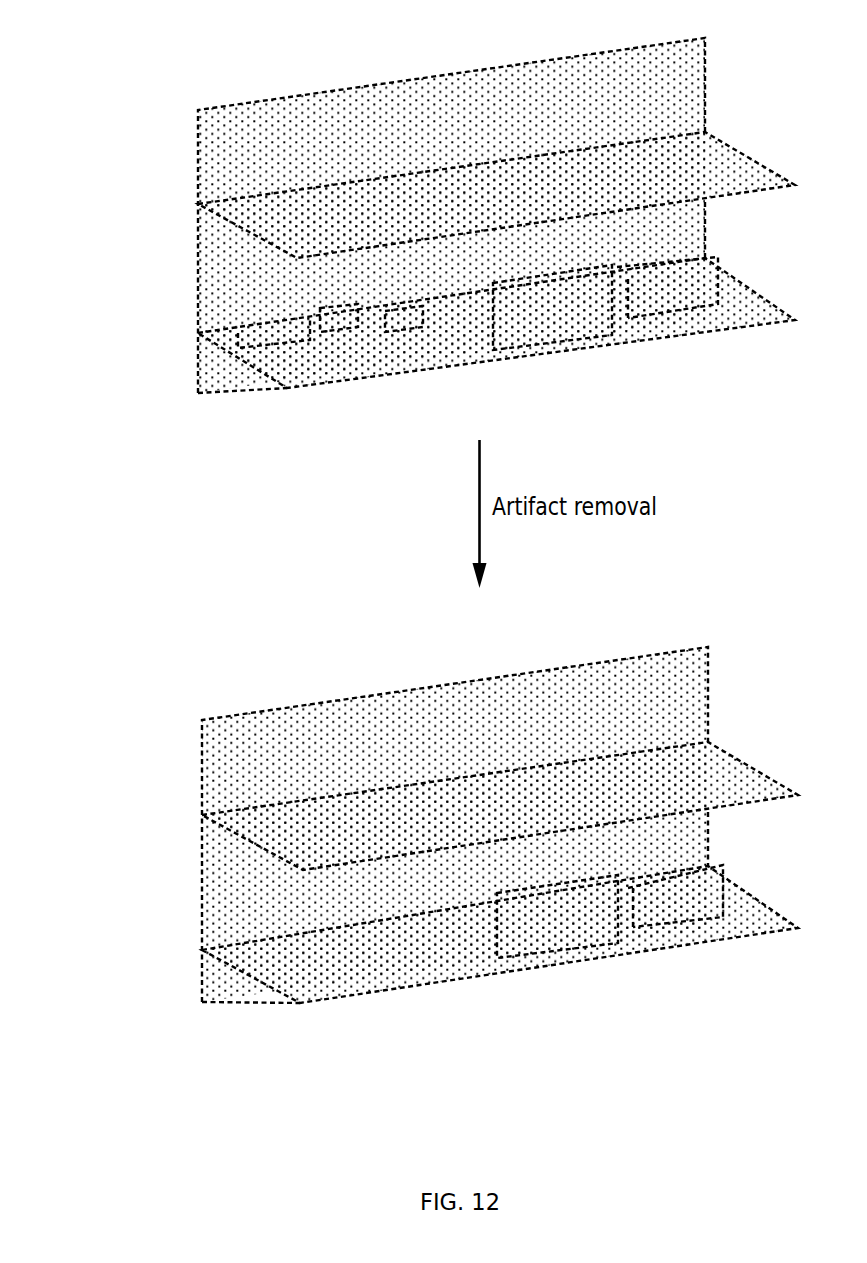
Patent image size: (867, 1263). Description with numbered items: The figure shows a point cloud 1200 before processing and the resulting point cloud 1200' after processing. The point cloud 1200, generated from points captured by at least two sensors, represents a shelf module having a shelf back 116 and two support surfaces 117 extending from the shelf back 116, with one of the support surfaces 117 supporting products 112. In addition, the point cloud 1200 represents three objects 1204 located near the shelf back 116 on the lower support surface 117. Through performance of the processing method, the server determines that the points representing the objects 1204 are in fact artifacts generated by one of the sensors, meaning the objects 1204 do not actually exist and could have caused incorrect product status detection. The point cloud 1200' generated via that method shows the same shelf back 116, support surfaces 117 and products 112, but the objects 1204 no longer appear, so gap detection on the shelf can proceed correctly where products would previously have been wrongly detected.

The point cloud 1200 is at (445, 200).
The point cloud 1200' is at (421, 825).
The shelf back 116 is at (217, 260).
The support surface 117 is at (277, 216).
The objects 1204 is at (253, 337).
The products 112 is at (555, 296).